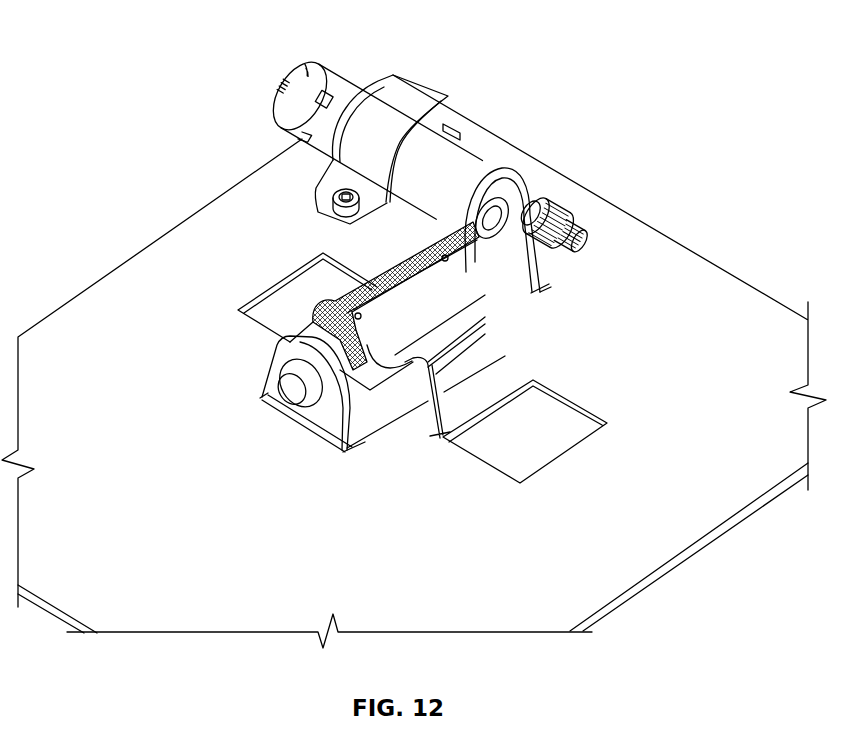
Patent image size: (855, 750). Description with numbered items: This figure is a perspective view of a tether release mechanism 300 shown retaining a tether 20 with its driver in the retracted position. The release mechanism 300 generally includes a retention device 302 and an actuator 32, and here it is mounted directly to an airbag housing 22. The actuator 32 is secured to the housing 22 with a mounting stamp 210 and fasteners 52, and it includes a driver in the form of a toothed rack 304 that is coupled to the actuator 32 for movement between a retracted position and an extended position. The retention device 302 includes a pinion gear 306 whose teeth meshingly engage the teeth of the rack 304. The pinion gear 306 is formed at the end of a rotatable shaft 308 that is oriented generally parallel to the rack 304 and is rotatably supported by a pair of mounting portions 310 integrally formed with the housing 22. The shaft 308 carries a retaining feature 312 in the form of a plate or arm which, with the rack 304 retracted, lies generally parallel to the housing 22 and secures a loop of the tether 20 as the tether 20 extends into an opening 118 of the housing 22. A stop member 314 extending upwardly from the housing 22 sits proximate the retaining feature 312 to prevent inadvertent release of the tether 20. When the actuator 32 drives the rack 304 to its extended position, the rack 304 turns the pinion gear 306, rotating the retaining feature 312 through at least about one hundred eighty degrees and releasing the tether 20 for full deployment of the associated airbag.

The airbag housing 22 is at (703, 256).
The actuator 32 is at (347, 70).
The mounting stamp 210 is at (400, 120).
The fasteners 52 is at (337, 207).
The tether release mechanism 300 is at (520, 131).
The pinion gear 306 is at (541, 197).
The toothed rack 304 is at (572, 226).
The mounting portions 310 is at (538, 296).
The rotatable shaft 308 is at (292, 389).
The opening 118 is at (274, 292).
The retention device 302 is at (407, 384).
The tether 20 is at (316, 320).
The retaining feature 312 is at (531, 317).
The stop member 314 is at (516, 373).